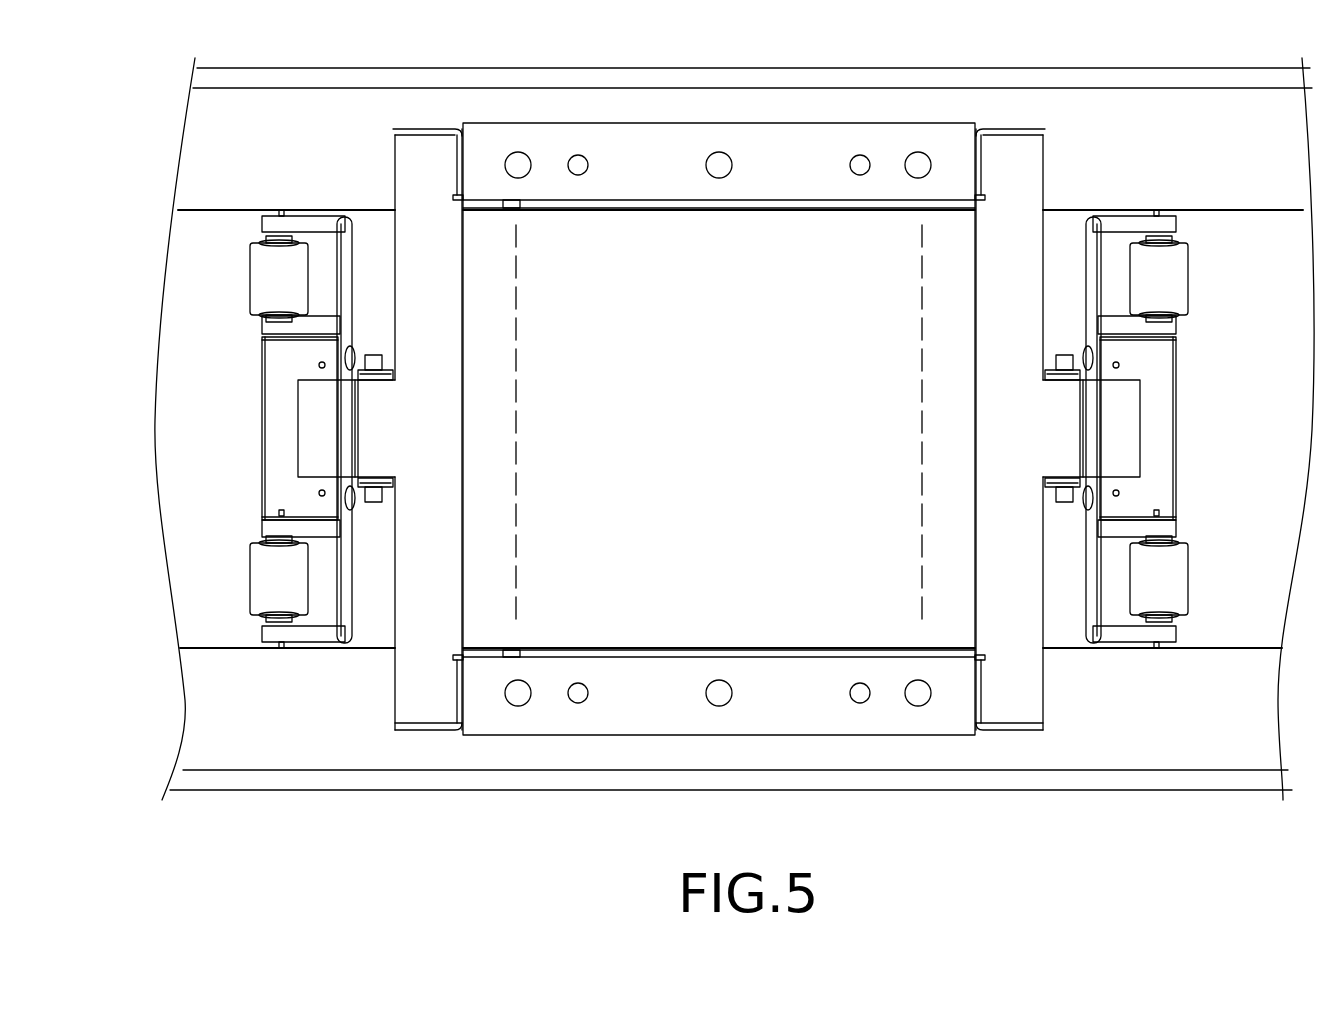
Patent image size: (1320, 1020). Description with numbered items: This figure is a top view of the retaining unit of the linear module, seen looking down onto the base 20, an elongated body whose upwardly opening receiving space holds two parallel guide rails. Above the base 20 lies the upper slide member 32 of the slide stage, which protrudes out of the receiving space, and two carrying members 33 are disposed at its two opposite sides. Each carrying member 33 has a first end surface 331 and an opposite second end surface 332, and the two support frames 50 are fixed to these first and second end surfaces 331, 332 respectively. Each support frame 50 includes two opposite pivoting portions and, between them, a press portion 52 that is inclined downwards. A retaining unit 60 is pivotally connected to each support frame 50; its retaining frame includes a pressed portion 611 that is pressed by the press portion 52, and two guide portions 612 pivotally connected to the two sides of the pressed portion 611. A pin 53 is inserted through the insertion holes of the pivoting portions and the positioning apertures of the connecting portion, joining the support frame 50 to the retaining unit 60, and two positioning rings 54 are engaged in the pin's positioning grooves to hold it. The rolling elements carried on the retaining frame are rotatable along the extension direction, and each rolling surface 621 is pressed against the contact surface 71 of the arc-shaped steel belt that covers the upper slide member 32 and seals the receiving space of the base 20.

The base 20 is at (1146, 782).
The upper slide member 32 is at (625, 205).
The carrying member 33 is at (783, 140).
The first end surface 331 is at (462, 152).
The second end surface 332 is at (985, 165).
The support frame 50 is at (668, 373).
The press portion 52 is at (318, 408).
The pin 53 is at (375, 356).
The positioning ring 54 is at (385, 373).
The retaining unit 60 is at (1184, 418).
The pressed portion 611 is at (282, 442).
The guide portion 612 is at (320, 255).
The rolling surface 621 is at (258, 282).
The contact surface 71 is at (223, 391).